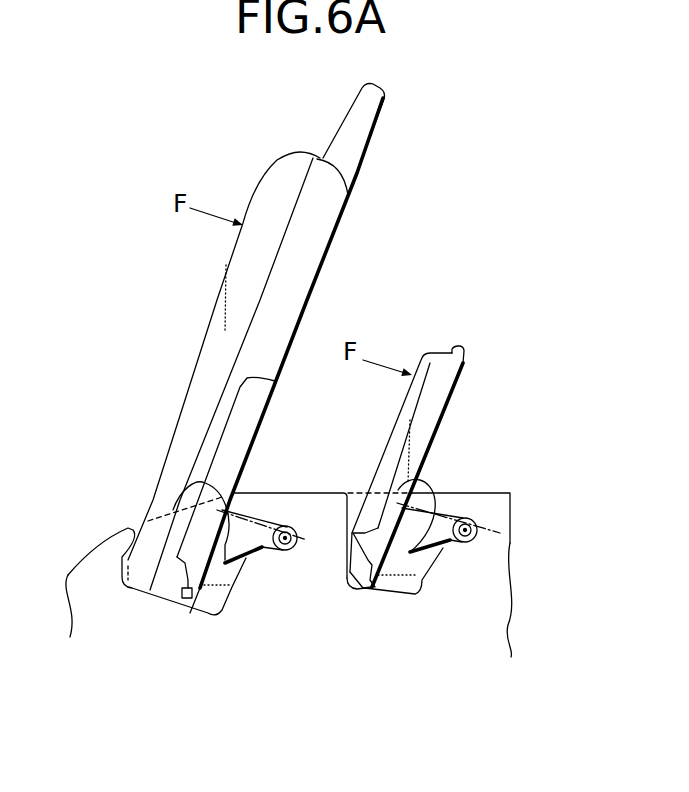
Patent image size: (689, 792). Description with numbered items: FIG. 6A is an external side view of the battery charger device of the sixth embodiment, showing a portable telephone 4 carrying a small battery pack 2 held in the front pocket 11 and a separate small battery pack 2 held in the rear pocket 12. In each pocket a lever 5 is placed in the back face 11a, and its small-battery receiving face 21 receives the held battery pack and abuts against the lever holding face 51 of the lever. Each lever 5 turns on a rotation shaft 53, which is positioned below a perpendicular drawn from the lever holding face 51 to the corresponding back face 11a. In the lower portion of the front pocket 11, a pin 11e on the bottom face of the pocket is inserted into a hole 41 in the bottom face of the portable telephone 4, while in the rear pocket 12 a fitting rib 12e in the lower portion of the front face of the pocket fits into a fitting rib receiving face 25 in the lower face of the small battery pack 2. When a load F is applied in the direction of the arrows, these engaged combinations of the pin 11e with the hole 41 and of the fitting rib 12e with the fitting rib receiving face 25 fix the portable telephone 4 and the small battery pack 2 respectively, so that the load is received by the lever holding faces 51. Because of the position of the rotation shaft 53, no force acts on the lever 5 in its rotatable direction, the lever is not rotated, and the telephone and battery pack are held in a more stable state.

The small battery pack 2 is at (437, 392).
The portable telephone 4 is at (305, 260).
The lever 5 is at (177, 510).
The front pocket 11 is at (203, 617).
The back face 11a is at (282, 494).
The pin 11e is at (182, 607).
The rear pocket 12 is at (407, 587).
The fitting rib 12e is at (350, 580).
The small-battery receiving face 21 is at (218, 500).
The fitting rib receiving face 25 is at (367, 590).
The hole 41 is at (173, 600).
The lever holding face 51 is at (250, 494).
The rotation shaft 53 is at (280, 550).